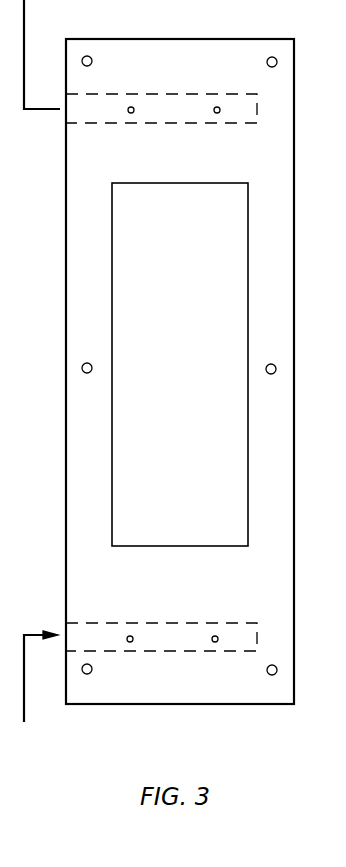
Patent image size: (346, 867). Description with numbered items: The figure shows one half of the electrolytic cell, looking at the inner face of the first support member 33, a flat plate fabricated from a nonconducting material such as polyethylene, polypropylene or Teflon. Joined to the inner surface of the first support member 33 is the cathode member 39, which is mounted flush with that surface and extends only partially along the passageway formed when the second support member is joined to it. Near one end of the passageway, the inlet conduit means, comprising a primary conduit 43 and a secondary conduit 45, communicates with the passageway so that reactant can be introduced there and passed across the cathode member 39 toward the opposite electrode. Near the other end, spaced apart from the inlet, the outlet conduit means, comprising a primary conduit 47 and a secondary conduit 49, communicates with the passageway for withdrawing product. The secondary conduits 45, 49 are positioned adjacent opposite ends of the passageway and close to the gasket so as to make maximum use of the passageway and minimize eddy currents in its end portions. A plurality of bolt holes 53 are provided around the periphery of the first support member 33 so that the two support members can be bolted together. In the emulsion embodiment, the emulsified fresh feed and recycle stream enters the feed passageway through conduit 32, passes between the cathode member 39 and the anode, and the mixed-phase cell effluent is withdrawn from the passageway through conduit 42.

The conduit 32 is at (42, 633).
The first support member 33 is at (296, 148).
The cathode member 39 is at (187, 379).
The conduit 42 is at (36, 110).
The primary conduit 43 is at (102, 622).
The secondary conduit 45 is at (212, 639).
The primary conduit 47 is at (137, 95).
The secondary conduit 49 is at (214, 110).
The bolt holes 53 is at (277, 367).